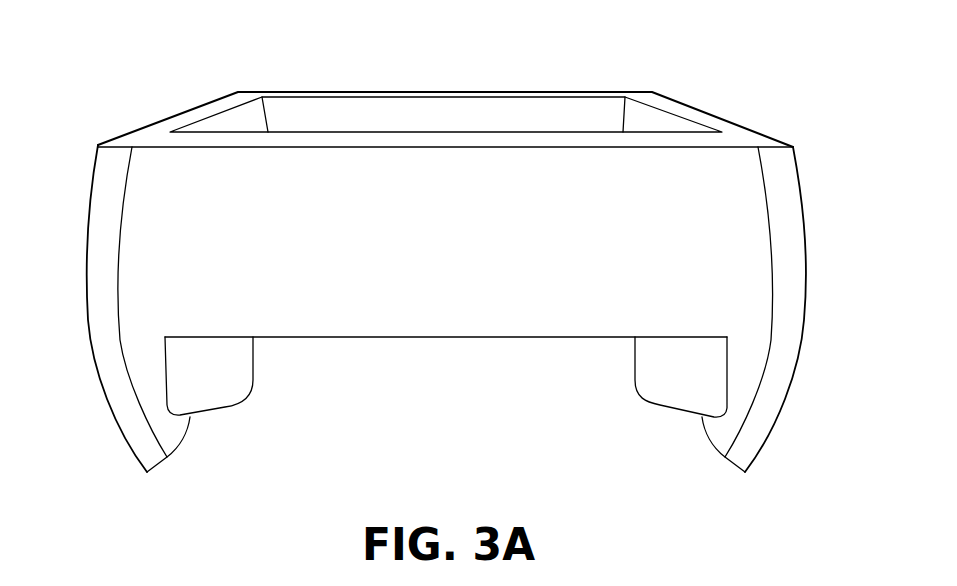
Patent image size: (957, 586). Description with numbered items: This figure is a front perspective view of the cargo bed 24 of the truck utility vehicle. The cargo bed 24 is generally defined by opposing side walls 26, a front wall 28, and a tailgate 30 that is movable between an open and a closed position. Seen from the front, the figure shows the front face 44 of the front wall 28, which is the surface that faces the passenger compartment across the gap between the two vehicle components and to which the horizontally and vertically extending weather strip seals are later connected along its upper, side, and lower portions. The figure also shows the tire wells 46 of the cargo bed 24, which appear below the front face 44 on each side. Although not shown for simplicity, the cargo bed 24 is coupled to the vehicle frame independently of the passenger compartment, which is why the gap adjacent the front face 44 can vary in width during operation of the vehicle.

The cargo bed 24 is at (455, 258).
The side walls 26 is at (97, 272).
The front wall 28 is at (312, 138).
The tailgate 30 is at (527, 91).
The front face 44 is at (348, 295).
The tire wells 46 is at (213, 390).